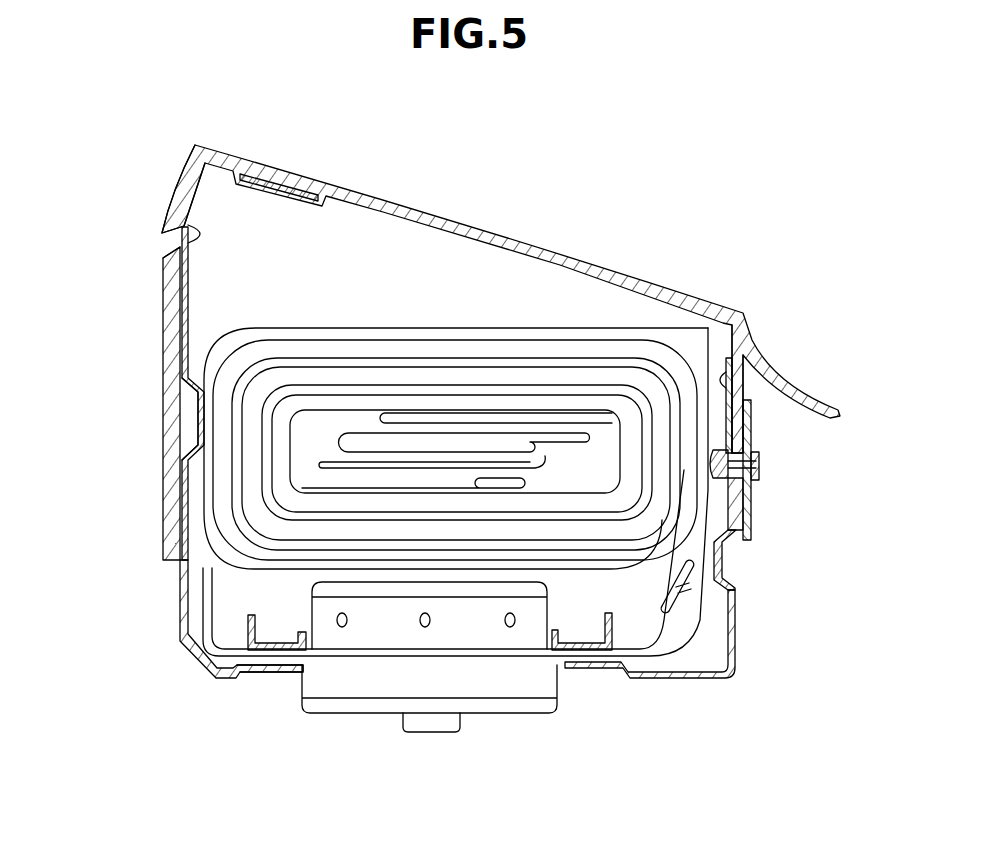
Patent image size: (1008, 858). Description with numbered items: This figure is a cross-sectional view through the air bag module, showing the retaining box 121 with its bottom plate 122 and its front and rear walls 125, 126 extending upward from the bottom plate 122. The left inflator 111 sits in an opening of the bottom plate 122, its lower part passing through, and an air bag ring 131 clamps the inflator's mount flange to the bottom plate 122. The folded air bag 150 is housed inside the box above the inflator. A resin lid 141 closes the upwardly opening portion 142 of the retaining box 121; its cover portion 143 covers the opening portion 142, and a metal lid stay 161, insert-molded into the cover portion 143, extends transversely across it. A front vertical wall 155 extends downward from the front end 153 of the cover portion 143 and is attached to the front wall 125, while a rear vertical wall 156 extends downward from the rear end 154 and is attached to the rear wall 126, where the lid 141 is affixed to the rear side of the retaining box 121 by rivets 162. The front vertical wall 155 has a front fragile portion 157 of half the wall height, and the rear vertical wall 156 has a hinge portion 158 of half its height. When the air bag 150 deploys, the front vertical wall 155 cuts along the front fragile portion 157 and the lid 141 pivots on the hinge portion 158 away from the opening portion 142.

The left inflator 111 is at (530, 722).
The retaining box 121 is at (466, 479).
The bottom plate 122 is at (280, 672).
The front wall 125 is at (165, 345).
The rear wall 126 is at (745, 413).
The air bag ring 131 is at (587, 647).
The lid 141 is at (461, 269).
The opening portion 142 is at (186, 215).
The cover portion 143 is at (443, 213).
The air bag 150 is at (617, 330).
The front end 153 is at (192, 168).
The rear end 154 is at (738, 322).
The front vertical wall 155 is at (185, 420).
The rear vertical wall 156 is at (738, 553).
The front fragile portion 157 is at (163, 238).
The hinge portion 158 is at (745, 358).
The lid stay 161 is at (293, 172).
The rivets 162 is at (758, 480).